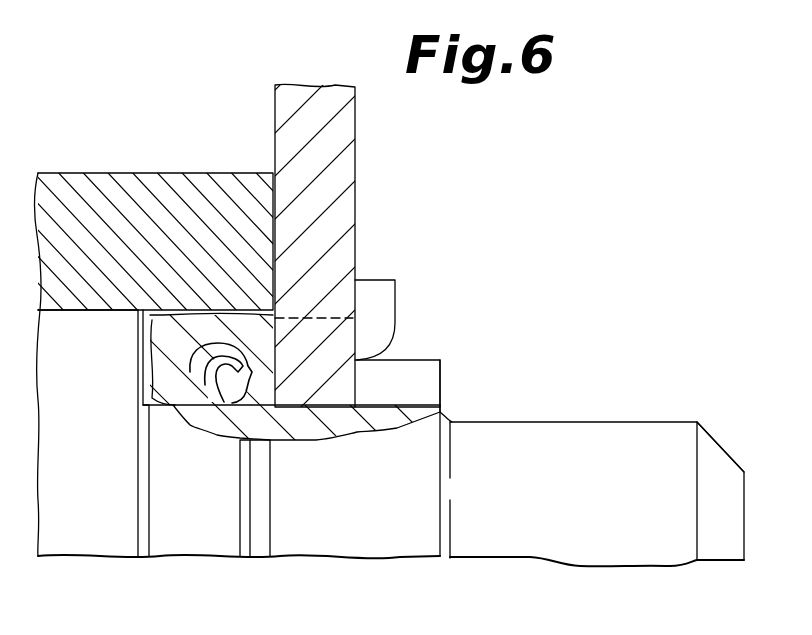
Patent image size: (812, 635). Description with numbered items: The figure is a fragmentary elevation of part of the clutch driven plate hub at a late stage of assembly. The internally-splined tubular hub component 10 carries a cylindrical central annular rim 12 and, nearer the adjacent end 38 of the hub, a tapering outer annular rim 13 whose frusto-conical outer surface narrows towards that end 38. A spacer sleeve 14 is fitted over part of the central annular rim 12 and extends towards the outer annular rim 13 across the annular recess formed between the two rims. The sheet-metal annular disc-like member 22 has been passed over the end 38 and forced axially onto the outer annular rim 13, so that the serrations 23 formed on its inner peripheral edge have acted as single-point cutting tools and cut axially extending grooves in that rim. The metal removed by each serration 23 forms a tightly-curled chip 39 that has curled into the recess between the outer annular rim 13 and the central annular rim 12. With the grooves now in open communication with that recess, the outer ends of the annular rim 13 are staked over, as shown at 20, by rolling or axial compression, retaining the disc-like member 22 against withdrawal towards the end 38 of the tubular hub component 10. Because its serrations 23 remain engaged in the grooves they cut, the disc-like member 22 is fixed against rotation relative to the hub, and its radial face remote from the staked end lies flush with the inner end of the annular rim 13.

The tubular hub component 10 is at (575, 462).
The central annular rim 12 is at (110, 533).
The outer annular rim 13 is at (397, 480).
The spacer sleeve 14 is at (132, 232).
The staked-over outer ends of annular rim 20 is at (372, 301).
The annular disc-like member 22 is at (305, 131).
The serrations 23 is at (333, 387).
The end of tubular hub component 38 is at (745, 507).
The tightly-curled chip 39 is at (167, 372).